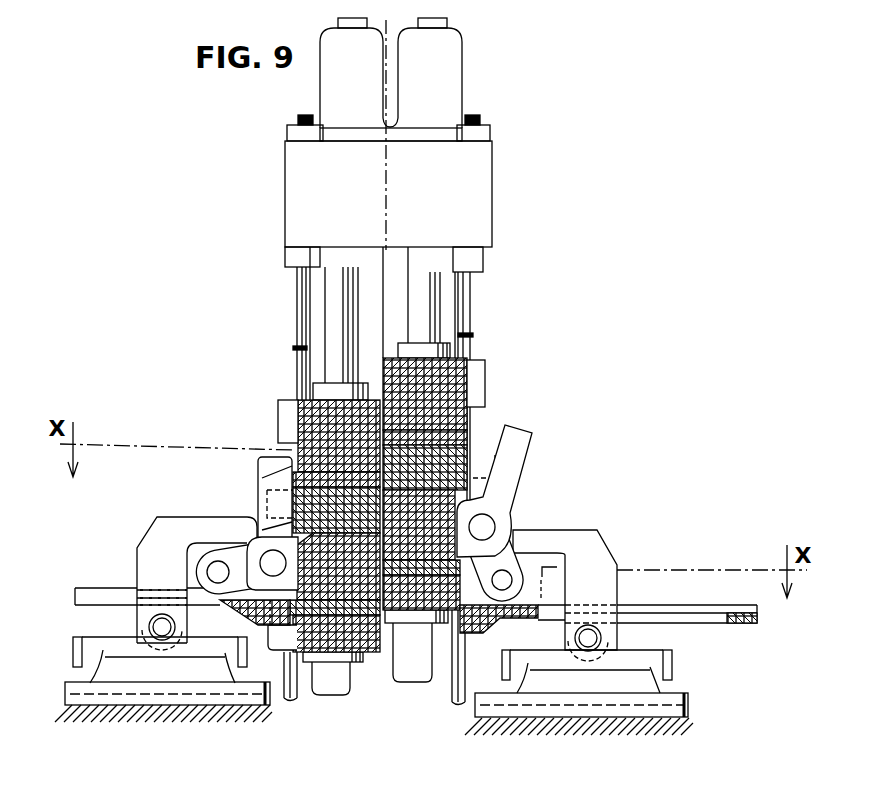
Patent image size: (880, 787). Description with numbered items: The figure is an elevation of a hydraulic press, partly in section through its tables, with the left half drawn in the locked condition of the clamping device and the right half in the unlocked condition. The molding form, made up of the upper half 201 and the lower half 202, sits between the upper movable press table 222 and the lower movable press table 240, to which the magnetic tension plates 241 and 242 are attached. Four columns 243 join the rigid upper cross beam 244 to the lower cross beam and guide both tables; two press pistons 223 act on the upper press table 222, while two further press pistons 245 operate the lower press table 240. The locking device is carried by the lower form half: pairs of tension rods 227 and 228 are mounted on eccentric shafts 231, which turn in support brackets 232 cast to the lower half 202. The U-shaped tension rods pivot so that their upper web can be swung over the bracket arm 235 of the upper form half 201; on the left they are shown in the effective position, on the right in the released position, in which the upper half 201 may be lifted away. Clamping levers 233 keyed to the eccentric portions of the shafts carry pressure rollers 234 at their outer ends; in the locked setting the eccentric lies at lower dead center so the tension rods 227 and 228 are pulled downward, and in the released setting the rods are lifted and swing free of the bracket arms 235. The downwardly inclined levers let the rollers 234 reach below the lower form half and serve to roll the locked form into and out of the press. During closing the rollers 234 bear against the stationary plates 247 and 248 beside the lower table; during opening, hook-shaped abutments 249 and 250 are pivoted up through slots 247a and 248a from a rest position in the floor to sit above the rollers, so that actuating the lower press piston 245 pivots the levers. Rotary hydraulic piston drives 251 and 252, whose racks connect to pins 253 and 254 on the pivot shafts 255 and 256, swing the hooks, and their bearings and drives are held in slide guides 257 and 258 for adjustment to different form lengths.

The upper half of the molding form 201 is at (450, 472).
The lower half of the molding form 202 is at (293, 510).
The upper movable press table 222 is at (460, 373).
The press pistons 223 is at (337, 316).
The tension rod 227 is at (277, 462).
The tension rod 228 is at (518, 437).
The eccentric shaft 231 is at (250, 610).
The support bracket 232 is at (250, 537).
The clamping lever 233 is at (213, 552).
The pressure roller 234 is at (200, 571).
The bracket arm 235 is at (270, 495).
The lower movable press table 240 is at (333, 648).
The magnetic tension plate 241 is at (287, 472).
The magnetic tension plate 242 is at (362, 635).
The column 243 is at (298, 283).
The upper cross beam 244 is at (475, 185).
The press pistons 245 is at (407, 673).
The stationary plate 247 is at (100, 590).
The slot 247a is at (75, 600).
The stationary plate 248 is at (743, 627).
The slot 248a is at (665, 615).
The hook-shaped abutment 249 is at (150, 537).
The hook-shaped abutment 250 is at (598, 550).
The rotary hydraulic piston drive 251 is at (73, 645).
The rotary hydraulic piston drive 252 is at (673, 665).
The pin 253 is at (150, 622).
The pin 254 is at (617, 637).
The pivot shaft 255 is at (167, 646).
The pivot shaft 256 is at (575, 637).
The slide guide 257 is at (160, 695).
The slide guide 258 is at (592, 707).